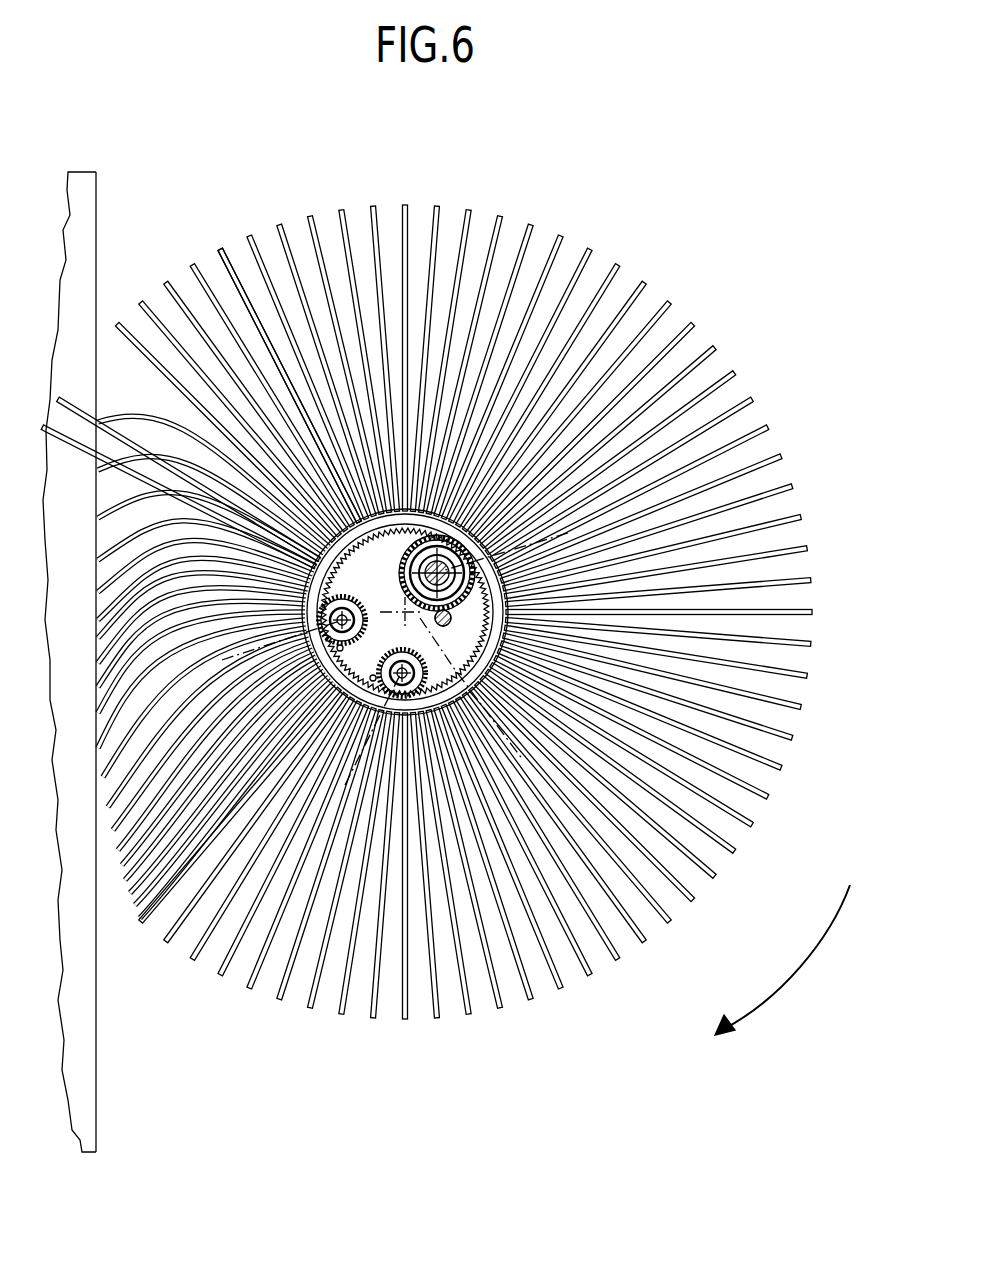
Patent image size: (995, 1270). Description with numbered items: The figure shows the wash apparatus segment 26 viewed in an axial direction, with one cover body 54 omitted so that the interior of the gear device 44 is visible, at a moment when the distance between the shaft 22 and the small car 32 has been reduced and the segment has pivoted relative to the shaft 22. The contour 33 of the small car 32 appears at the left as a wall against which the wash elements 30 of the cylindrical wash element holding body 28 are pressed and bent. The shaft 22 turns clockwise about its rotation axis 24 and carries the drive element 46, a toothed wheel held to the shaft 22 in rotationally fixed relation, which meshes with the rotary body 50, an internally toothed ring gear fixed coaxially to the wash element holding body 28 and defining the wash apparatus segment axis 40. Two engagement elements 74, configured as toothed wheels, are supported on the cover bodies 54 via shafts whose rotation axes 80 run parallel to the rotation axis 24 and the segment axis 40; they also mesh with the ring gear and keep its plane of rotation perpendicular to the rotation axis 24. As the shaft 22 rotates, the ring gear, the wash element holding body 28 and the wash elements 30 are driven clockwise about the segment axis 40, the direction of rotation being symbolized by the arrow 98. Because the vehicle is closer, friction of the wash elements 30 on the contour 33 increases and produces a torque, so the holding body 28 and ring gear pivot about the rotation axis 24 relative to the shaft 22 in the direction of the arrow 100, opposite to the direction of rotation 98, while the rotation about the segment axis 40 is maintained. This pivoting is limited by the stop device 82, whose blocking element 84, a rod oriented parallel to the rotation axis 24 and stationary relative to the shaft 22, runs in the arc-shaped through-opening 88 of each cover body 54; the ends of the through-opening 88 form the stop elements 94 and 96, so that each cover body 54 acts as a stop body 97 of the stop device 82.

The shaft 22 is at (460, 570).
The rotation axis 24 is at (556, 534).
The wash apparatus segment 26 is at (570, 234).
The wash element holding body 28 is at (470, 680).
The wash elements 30 is at (440, 985).
The small car 32 is at (80, 183).
The contour 33 is at (97, 238).
The wash apparatus segment axis 40 is at (484, 698).
The gear device 44 is at (498, 504).
The drive element 46 is at (460, 547).
The rotary body 50 is at (340, 675).
The cover bodies 54 is at (336, 576).
The engagement elements 74 is at (318, 622).
The rotation axes 80 is at (299, 719).
The stop device 82 is at (463, 638).
The blocking element 84 is at (451, 618).
The through-opening 88 is at (353, 567).
The stop element 94 is at (500, 587).
The stop element 96 is at (418, 522).
The stop body 97 is at (350, 548).
The arrow 98 is at (800, 942).
The arrow 100 is at (404, 627).